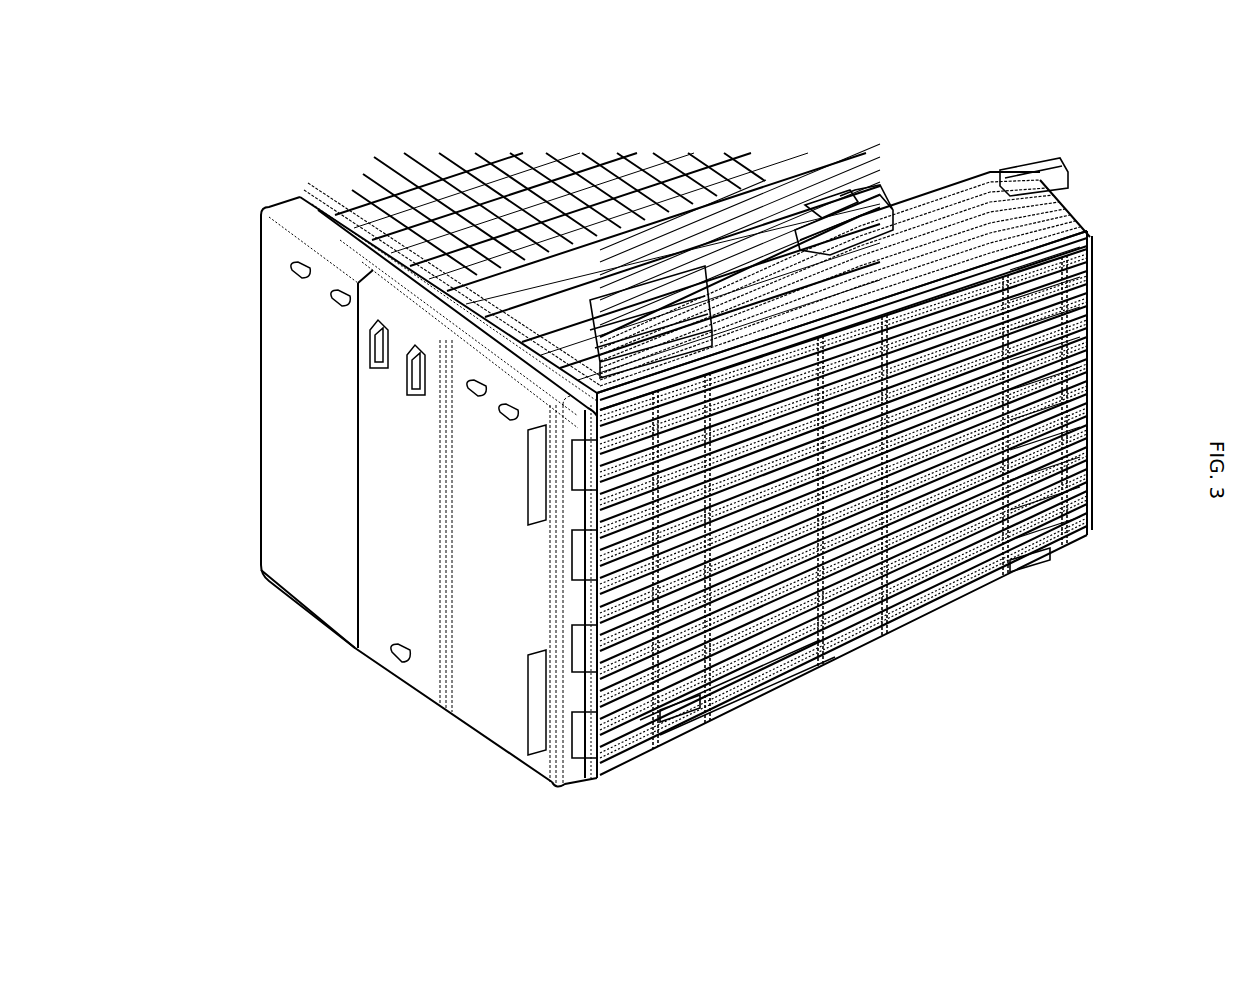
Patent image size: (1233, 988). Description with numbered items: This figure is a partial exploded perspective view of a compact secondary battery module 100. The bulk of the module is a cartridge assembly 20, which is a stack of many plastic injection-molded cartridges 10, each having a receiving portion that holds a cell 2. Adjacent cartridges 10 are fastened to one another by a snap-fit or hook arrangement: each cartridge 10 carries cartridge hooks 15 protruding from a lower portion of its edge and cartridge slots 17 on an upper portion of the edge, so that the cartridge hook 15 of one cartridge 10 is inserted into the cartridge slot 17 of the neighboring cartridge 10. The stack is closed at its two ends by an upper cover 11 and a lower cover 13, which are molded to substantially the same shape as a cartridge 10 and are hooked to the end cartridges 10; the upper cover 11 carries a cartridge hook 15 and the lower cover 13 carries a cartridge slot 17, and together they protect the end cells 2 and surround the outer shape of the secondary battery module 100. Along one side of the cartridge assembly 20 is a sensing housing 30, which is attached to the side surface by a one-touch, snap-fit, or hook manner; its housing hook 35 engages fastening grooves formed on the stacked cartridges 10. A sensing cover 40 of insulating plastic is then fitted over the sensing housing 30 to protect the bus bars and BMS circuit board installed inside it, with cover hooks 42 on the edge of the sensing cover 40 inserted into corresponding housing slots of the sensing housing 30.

The secondary battery module 100 is at (917, 778).
The cell 2 is at (975, 215).
The cartridge 10 is at (1095, 330).
The upper cover 11 is at (500, 172).
The lower cover 13 is at (745, 680).
The cartridge hook 15 is at (812, 215).
The cartridge slot 17 is at (697, 267).
The cartridge assembly 20 is at (875, 674).
The sensing housing 30 is at (292, 196).
The housing hook 35 is at (586, 748).
The sensing cover 40 is at (250, 380).
The cover hook 42 is at (592, 672).